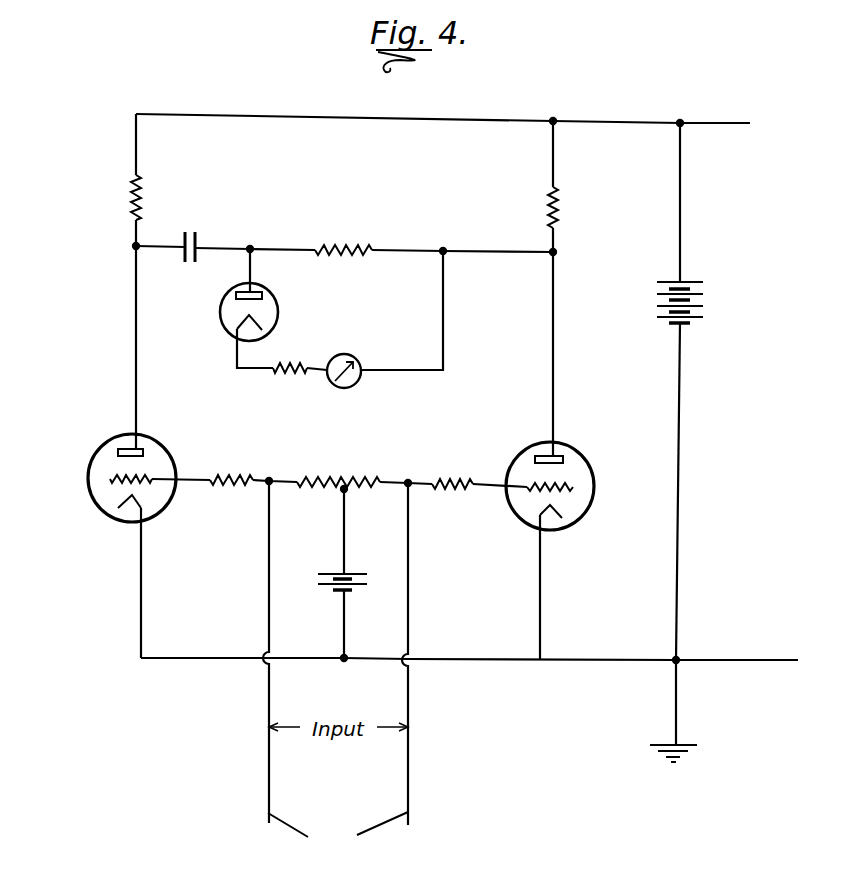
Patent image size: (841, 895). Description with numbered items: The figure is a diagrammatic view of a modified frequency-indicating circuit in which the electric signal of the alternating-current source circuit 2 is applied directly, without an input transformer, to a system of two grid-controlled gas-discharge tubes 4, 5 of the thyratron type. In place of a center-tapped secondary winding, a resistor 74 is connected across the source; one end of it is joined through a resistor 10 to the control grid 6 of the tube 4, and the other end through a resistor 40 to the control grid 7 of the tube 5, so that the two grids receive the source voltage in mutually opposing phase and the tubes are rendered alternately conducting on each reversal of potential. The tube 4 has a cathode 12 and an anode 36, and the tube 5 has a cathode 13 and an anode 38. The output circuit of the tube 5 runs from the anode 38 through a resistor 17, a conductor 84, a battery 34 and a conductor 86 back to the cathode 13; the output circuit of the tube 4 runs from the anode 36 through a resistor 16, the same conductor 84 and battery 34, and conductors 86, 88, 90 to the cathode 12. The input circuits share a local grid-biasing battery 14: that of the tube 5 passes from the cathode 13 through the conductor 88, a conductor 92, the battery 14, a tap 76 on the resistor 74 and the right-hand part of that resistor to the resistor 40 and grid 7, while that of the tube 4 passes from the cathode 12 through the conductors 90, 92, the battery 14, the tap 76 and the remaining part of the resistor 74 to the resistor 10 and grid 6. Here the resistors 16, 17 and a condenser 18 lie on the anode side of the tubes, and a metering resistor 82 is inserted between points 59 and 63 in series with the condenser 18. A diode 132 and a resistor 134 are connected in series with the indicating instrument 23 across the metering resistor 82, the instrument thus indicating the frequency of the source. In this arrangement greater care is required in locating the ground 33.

The conductor 84 is at (603, 122).
The resistor 16 is at (142, 197).
The condenser 18 is at (193, 240).
The metering resistor 82 is at (348, 243).
The resistor 17 is at (558, 212).
The point 59 is at (134, 246).
The point 63 is at (555, 252).
The battery 34 is at (690, 290).
The diode 132 is at (277, 300).
The resistor 134 is at (283, 363).
The indicating instrument 23 is at (357, 360).
The anode or plate 36 is at (127, 447).
The tube 4 is at (90, 461).
The control grid 6 is at (112, 484).
The cathode or filament 12 is at (118, 507).
The resistor 10 is at (228, 478).
The resistor 74 is at (315, 476).
The tap 76 is at (341, 491).
The resistor 40 is at (450, 479).
The anode or plate 38 is at (562, 456).
The tube 5 is at (587, 458).
The control grid 7 is at (568, 483).
The cathode or filament 13 is at (556, 508).
The local grid-biasing battery 14 is at (352, 572).
The conductor 90 is at (290, 653).
The conductor 92 is at (344, 635).
The conductor 88 is at (448, 655).
The conductor 86 is at (593, 658).
The ground 33 is at (667, 757).
The circuit 2 is at (338, 834).